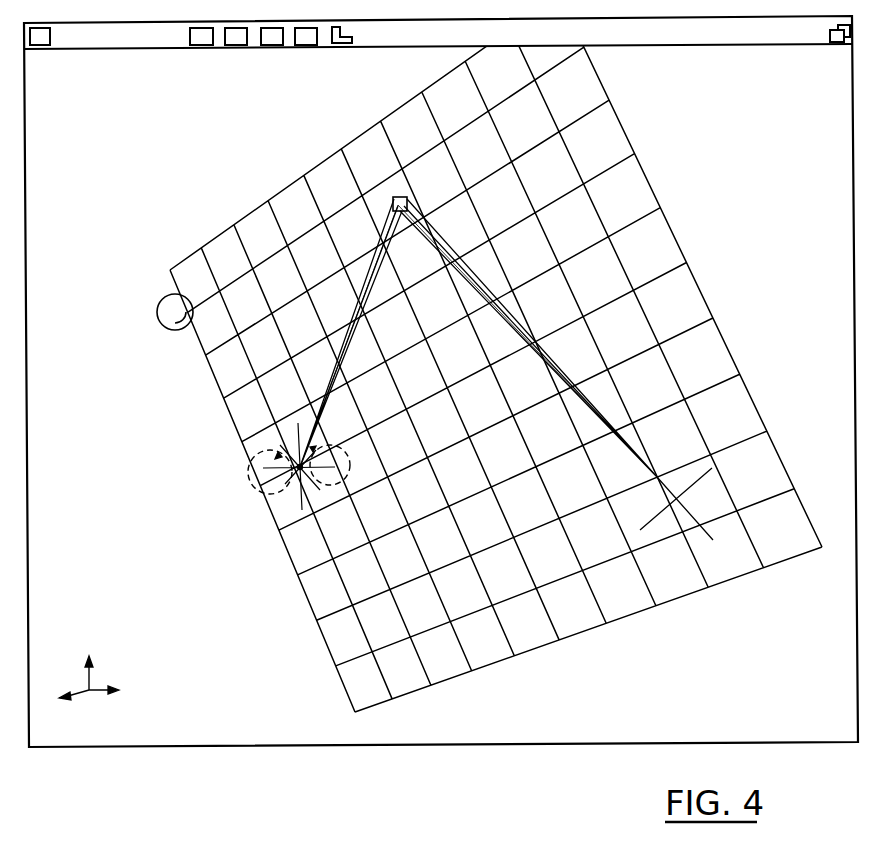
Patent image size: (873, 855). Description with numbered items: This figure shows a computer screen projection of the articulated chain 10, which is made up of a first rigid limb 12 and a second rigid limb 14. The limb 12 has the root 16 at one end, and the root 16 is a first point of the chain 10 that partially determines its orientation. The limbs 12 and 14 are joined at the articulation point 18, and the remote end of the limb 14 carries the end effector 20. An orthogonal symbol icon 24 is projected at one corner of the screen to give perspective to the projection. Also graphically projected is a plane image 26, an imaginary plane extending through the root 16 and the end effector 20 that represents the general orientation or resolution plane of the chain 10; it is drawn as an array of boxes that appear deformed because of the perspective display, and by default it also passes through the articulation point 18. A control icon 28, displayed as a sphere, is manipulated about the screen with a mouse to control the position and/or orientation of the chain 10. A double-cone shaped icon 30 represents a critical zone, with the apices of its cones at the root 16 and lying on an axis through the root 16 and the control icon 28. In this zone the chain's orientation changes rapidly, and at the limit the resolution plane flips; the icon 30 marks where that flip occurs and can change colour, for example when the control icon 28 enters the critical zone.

The articulated chain 10 is at (534, 312).
The first rigid limb 12 is at (350, 312).
The second rigid limb 14 is at (490, 286).
The root 16 is at (310, 474).
The articulation point 18 is at (405, 197).
The end effector 20 is at (675, 503).
The orthogonal symbol icon 24 is at (91, 703).
The plane image 26 is at (698, 288).
The control icon 28 is at (157, 305).
The double-cone shaped icon 30 is at (265, 480).